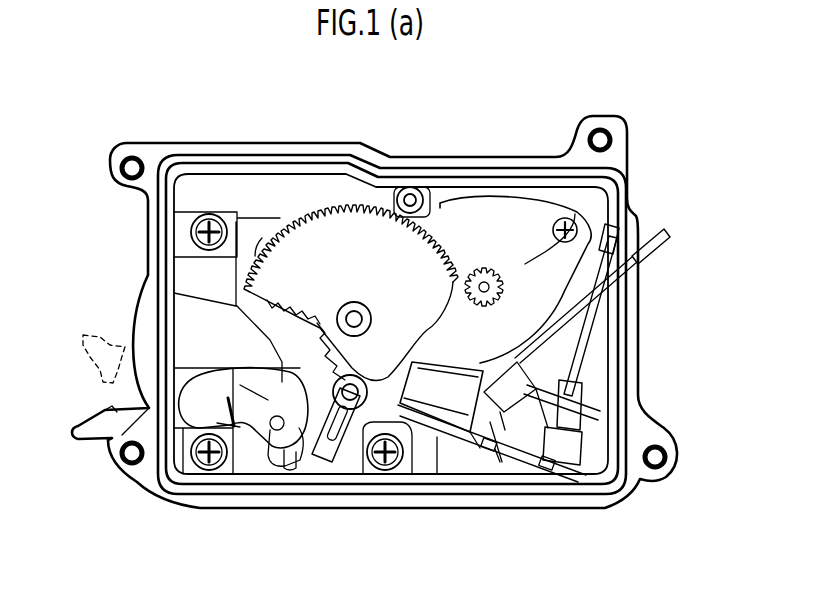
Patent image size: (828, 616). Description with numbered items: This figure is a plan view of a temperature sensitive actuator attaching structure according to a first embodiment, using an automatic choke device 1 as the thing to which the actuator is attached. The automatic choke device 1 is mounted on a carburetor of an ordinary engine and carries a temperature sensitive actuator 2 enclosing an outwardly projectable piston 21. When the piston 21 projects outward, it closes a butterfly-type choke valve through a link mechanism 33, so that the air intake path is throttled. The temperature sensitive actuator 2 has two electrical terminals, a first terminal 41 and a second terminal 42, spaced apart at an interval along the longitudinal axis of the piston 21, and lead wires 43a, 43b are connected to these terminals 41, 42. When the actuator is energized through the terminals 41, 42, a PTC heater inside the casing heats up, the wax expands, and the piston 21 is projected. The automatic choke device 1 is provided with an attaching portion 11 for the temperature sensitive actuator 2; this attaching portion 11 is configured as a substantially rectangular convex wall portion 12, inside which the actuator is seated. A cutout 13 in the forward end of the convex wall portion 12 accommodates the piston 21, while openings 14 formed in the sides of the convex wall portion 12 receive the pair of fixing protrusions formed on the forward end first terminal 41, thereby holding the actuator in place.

The automatic choke device 1 is at (195, 145).
The temperature sensitive actuator 2 is at (447, 392).
The attaching portion 11 is at (490, 463).
The convex wall portion 12 is at (526, 445).
The cutout 13 is at (365, 428).
The openings 14 is at (492, 422).
The piston 21 is at (318, 467).
The link mechanism 33 is at (322, 377).
The first terminal 41 is at (500, 463).
The second terminal 42 is at (570, 443).
The lead wire 43a is at (628, 268).
The lead wire 43b is at (598, 326).